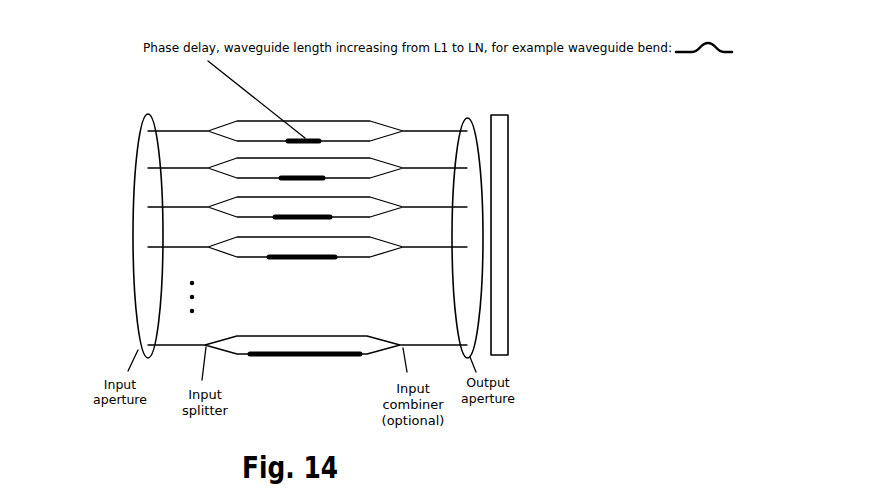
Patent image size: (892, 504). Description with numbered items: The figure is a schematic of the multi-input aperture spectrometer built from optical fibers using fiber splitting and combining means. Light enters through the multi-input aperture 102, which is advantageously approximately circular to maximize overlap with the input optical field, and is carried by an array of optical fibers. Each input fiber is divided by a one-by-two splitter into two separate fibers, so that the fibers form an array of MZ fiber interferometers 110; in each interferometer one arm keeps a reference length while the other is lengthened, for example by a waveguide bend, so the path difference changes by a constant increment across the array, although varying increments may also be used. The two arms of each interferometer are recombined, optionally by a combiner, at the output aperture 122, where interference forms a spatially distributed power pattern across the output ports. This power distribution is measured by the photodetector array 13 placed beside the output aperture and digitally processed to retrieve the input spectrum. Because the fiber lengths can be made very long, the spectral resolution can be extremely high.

The multi-input aperture 102 is at (132, 225).
The array of MZ fiber interferometers 110 is at (312, 120).
The output aperture 122 is at (460, 293).
The photodetector array 13 is at (498, 181).